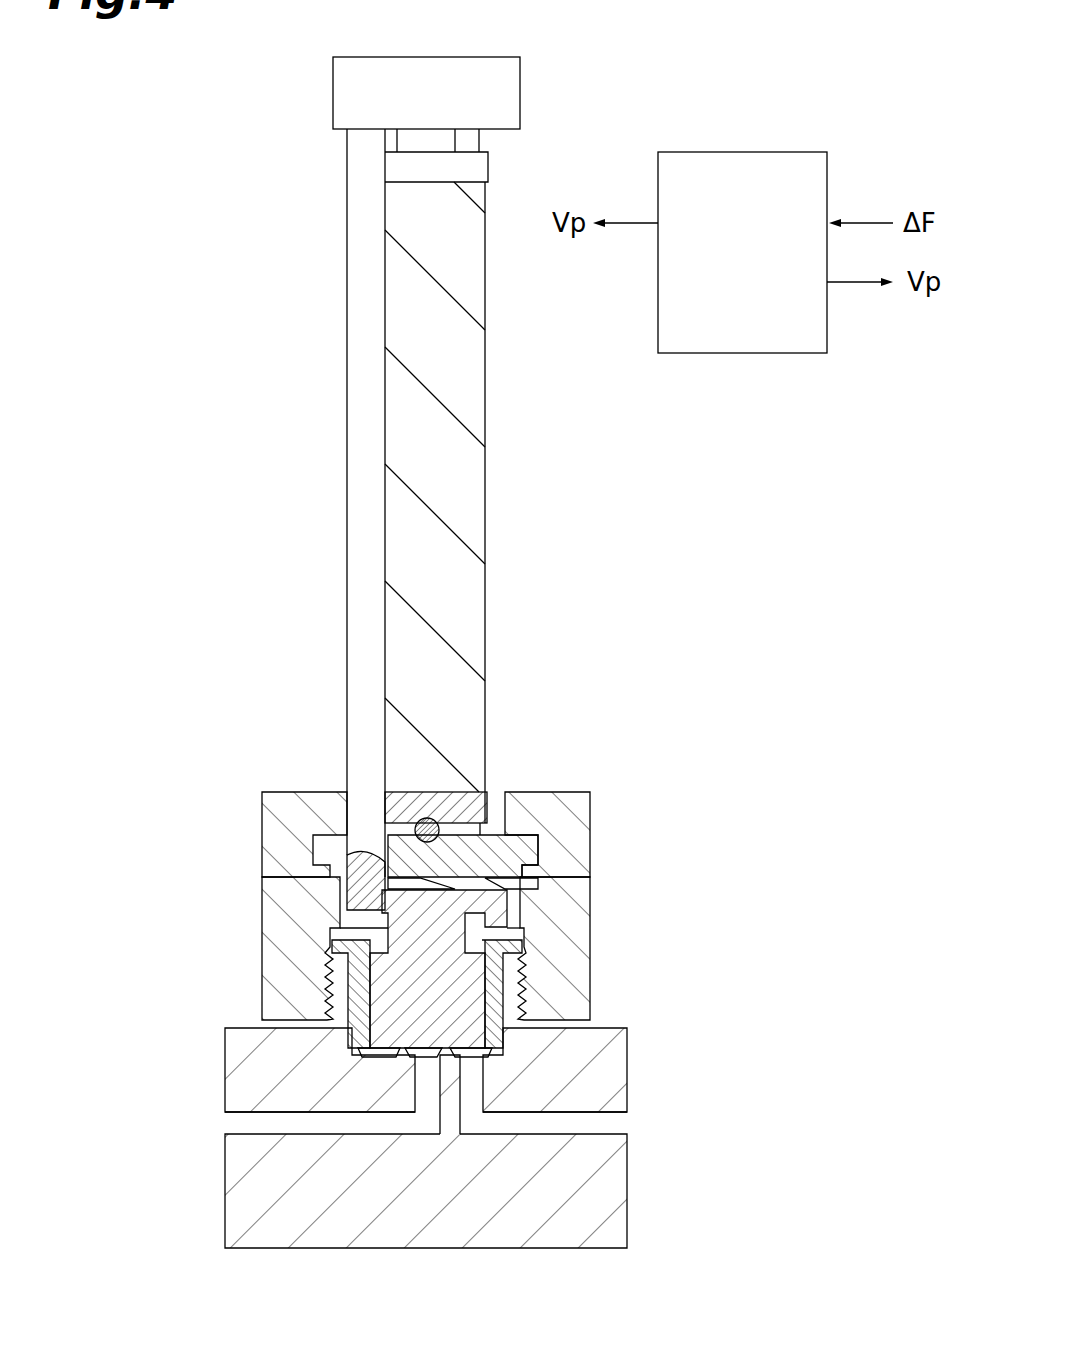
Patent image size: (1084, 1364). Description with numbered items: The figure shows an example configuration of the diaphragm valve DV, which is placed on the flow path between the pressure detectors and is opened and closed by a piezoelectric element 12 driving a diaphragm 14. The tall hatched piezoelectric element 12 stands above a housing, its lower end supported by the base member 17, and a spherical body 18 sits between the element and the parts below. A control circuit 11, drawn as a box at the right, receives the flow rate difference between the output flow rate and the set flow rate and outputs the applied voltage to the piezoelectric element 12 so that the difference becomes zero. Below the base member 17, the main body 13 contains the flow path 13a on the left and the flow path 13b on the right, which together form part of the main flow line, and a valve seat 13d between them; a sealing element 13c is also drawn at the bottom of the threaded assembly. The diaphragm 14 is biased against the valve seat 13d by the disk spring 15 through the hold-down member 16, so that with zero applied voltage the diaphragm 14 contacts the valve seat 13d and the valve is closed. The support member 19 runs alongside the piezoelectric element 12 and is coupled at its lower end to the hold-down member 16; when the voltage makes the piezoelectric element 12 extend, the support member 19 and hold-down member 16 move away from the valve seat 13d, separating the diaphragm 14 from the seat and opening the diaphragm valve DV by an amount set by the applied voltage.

The diaphragm valve DV is at (632, 57).
The control circuit 11 is at (786, 354).
The piezoelectric element 12 is at (486, 466).
The main body 13 is at (628, 1082).
The flow path 13a is at (246, 1125).
The flow path 13b is at (608, 1125).
The seal member 13c is at (390, 1064).
The valve seat 13d is at (442, 1056).
The diaphragm 14 is at (372, 1050).
The disk spring 15 is at (455, 885).
The hold-down member 16 is at (470, 992).
The base member 17 is at (508, 857).
The spherical body 18 is at (435, 821).
The support member 19 is at (352, 568).